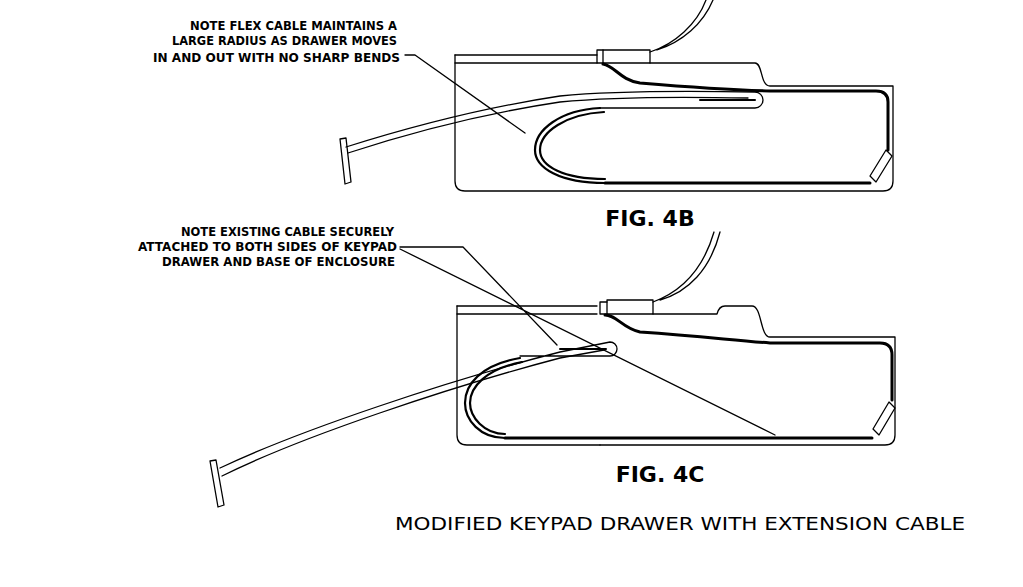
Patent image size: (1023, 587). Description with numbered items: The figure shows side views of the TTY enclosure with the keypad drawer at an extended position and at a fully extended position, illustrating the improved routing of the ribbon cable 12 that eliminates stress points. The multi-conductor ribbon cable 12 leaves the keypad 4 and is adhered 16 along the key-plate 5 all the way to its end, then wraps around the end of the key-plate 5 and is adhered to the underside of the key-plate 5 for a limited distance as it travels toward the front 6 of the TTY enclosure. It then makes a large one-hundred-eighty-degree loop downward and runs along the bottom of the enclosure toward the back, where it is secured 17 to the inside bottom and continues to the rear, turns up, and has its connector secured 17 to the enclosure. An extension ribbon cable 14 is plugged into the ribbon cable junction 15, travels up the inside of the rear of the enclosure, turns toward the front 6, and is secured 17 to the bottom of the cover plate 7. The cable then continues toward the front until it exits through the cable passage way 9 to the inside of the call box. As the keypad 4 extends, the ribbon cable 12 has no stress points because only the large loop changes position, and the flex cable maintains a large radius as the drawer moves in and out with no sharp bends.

In FIG. 4B, the keypad 4 is at (410, 125).
In FIG. 4C, the keypad 4 is at (305, 414).
In FIG. 4B, the key-plate 5 is at (340, 160).
In FIG. 4C, the key-plate 5 is at (222, 480).
In FIG. 4C, the front of TTY box 6 is at (455, 430).
In FIG. 4B, the cover plate of TTY box 7 is at (873, 85).
In FIG. 4C, the cover plate of TTY box 7 is at (877, 337).
In FIG. 4B, the cable passage way 9 is at (598, 56).
In FIG. 4C, the cable passage way 9 is at (600, 310).
In FIG. 4B, the ribbon cable 12 is at (555, 160).
In FIG. 4C, the ribbon cable 12 is at (487, 428).
In FIG. 4B, the extension ribbon cable 14 is at (707, 78).
In FIG. 4C, the extension ribbon cable 14 is at (720, 312).
In FIG. 4B, the ribbon cable junction 15 is at (885, 172).
In FIG. 4C, the ribbon cable junction 15 is at (888, 418).
In FIG. 4B, the ribbon cable secured to key-plate 16 is at (600, 80).
In FIG. 4C, the ribbon cable secured to key-plate 16 is at (517, 352).
In FIG. 4B, the secured to inside keyboard housing 17 is at (893, 142).
In FIG. 4C, the secured to inside keyboard housing 17 is at (897, 395).